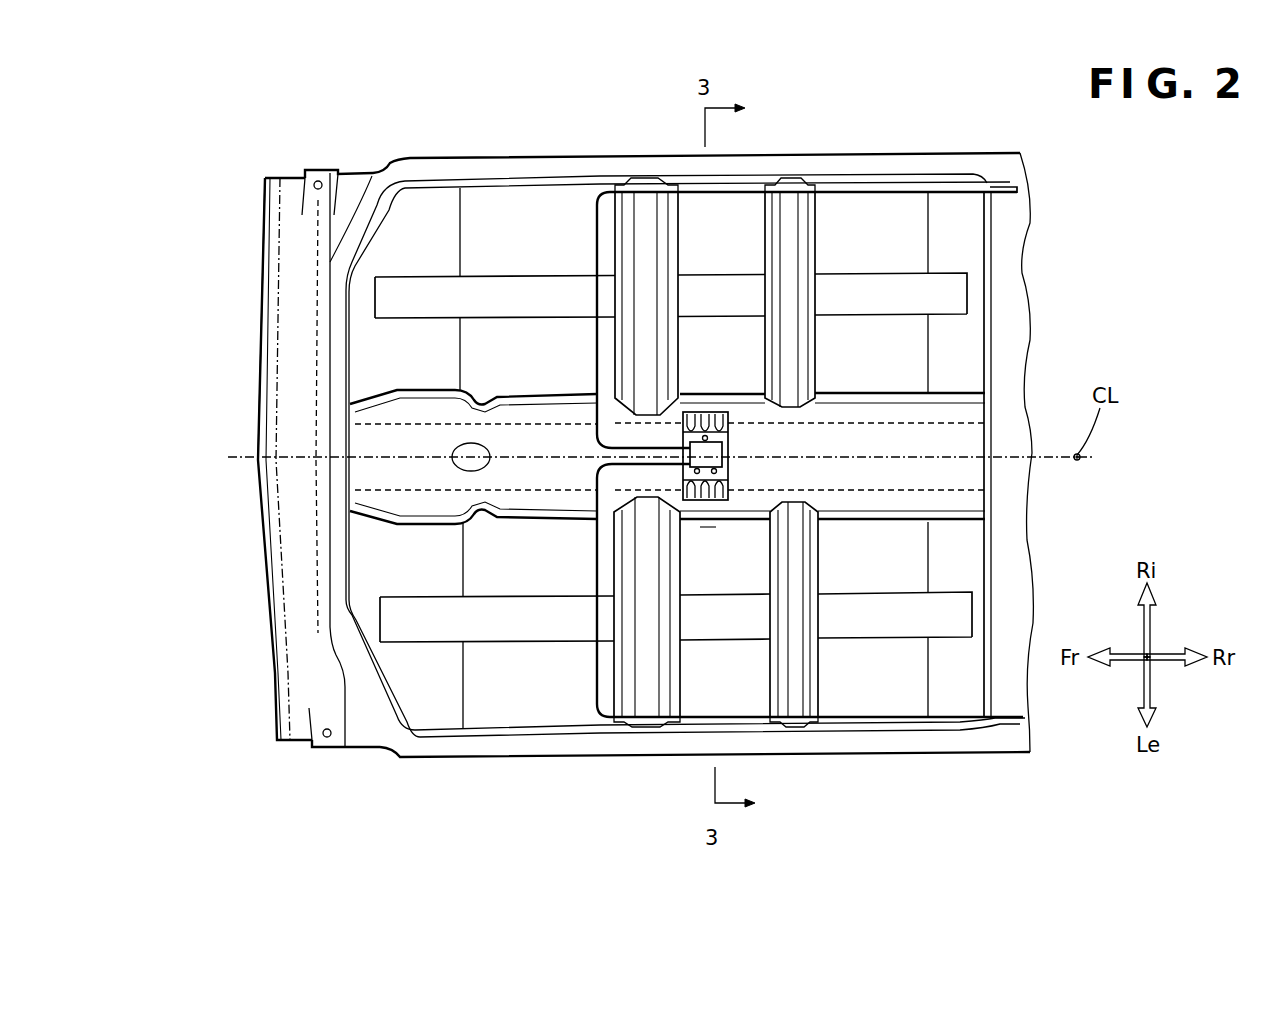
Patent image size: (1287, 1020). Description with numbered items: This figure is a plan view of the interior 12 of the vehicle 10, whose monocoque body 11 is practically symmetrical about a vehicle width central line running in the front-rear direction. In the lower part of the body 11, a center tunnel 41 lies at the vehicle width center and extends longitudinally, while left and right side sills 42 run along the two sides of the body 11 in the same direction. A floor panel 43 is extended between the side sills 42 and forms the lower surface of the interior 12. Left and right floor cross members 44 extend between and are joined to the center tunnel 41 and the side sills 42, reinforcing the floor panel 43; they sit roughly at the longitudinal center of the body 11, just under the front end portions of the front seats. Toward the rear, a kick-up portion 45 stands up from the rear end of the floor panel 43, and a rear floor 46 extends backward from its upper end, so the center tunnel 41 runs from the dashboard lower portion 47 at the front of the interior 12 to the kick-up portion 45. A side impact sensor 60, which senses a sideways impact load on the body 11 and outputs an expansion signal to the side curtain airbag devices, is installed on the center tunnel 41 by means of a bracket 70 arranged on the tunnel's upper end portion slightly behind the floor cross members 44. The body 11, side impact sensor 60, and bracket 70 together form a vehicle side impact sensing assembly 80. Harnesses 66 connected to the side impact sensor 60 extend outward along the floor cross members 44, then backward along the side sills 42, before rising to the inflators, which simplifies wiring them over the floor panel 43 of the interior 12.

The vehicle 10 is at (185, 148).
The body 11 is at (355, 170).
The interior 12 is at (734, 366).
The center tunnel 41 is at (877, 473).
The side sill 42 is at (537, 158).
The floor panel 43 is at (497, 707).
The floor cross member 44 is at (640, 225).
The kick-up portion 45 is at (965, 338).
The rear floor 46 is at (1008, 262).
The dashboard lower portion 47 is at (335, 345).
The side impact sensor 60 is at (727, 448).
The harness 66 is at (597, 350).
The bracket 70 is at (727, 482).
The vehicle side impact sensing assembly 80 is at (708, 530).